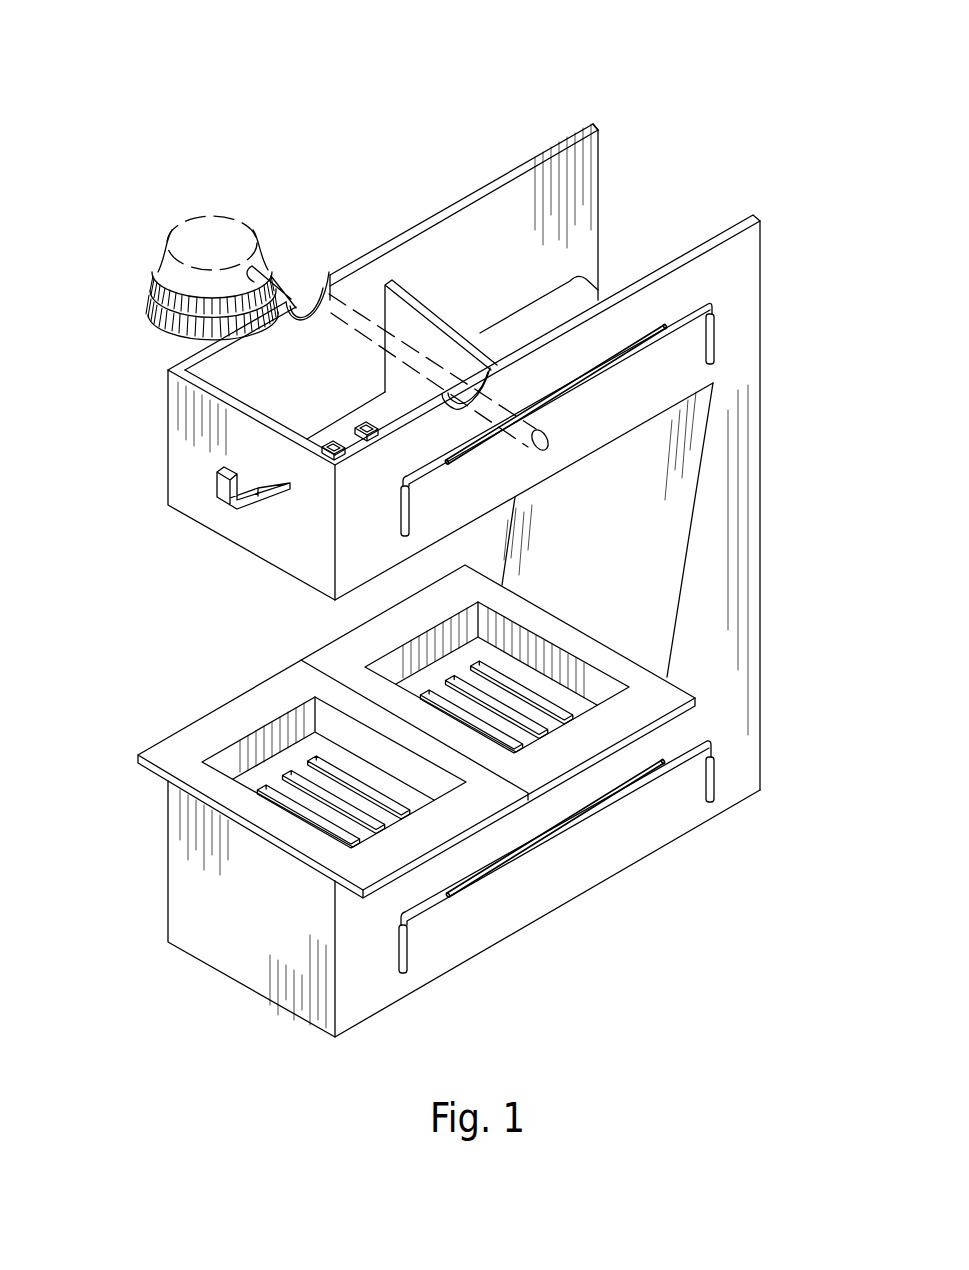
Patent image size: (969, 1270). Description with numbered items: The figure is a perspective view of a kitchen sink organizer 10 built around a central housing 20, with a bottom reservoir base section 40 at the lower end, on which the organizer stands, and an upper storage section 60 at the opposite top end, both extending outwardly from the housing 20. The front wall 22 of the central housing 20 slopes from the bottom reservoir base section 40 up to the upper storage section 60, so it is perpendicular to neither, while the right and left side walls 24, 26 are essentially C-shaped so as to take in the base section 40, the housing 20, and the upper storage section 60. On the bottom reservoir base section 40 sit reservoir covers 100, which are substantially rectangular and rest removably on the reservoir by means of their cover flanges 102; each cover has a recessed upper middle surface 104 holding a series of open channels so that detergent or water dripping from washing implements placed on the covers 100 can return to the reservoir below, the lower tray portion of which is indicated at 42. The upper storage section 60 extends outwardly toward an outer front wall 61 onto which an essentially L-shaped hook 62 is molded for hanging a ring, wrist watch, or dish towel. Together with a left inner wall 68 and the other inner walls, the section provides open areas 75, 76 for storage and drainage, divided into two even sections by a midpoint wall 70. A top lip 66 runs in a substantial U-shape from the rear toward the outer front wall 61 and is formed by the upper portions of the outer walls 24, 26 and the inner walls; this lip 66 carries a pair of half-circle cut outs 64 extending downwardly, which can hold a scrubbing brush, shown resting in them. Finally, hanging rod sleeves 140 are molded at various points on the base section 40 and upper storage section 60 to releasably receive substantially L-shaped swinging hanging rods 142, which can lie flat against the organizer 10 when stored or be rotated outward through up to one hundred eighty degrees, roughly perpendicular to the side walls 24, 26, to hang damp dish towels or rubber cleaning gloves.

The kitchen sink organizer 10 is at (320, 150).
The central housing 20 is at (778, 578).
The front wall 22 is at (618, 544).
The right side wall 24 is at (717, 665).
The left side wall 26 is at (440, 190).
The bottom reservoir base section 40 is at (778, 736).
The lower tray 42 is at (272, 920).
The upper storage section 60 is at (788, 260).
The outer front wall 61 is at (311, 499).
The L-shaped hook 62 is at (224, 504).
The half-circle cut outs 64 is at (318, 276).
The top lip 66 is at (591, 124).
The left inner wall 68 is at (507, 268).
The midpoint wall 70 is at (477, 366).
The open area 75 is at (238, 378).
The open area 76 is at (584, 268).
The reservoir covers 100 is at (325, 634).
The cover flange 102 is at (180, 748).
The recessed upper middle surface 104 is at (330, 755).
The hanging rod sleeves 140 is at (716, 340).
The swinging hanging rods 142 is at (701, 316).